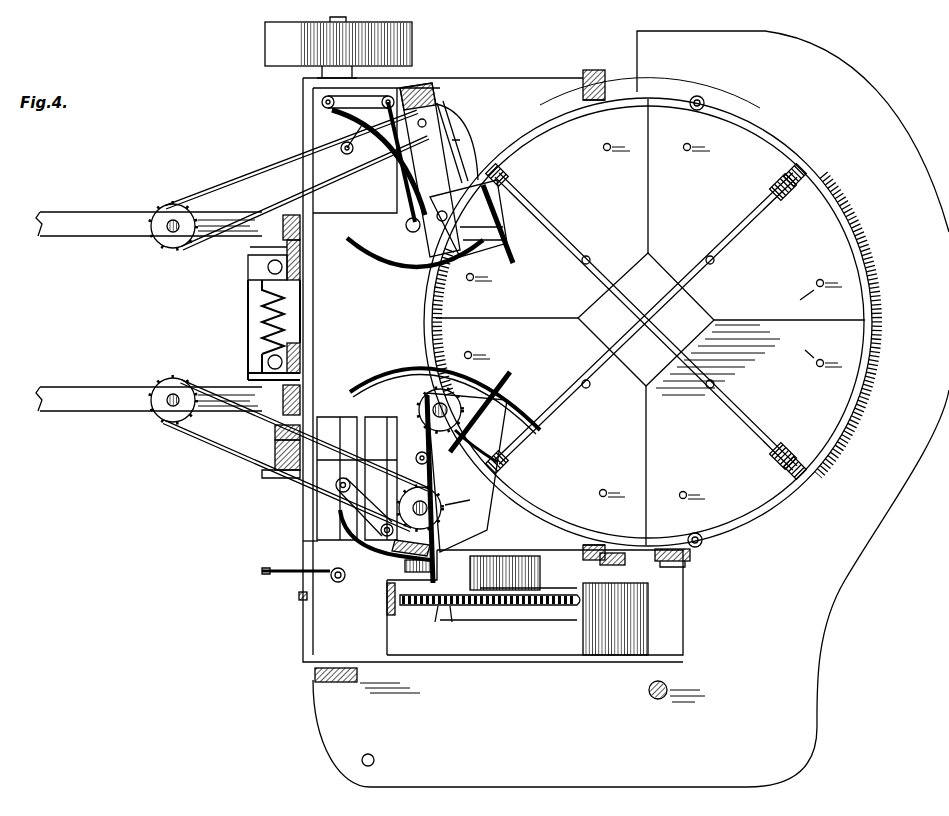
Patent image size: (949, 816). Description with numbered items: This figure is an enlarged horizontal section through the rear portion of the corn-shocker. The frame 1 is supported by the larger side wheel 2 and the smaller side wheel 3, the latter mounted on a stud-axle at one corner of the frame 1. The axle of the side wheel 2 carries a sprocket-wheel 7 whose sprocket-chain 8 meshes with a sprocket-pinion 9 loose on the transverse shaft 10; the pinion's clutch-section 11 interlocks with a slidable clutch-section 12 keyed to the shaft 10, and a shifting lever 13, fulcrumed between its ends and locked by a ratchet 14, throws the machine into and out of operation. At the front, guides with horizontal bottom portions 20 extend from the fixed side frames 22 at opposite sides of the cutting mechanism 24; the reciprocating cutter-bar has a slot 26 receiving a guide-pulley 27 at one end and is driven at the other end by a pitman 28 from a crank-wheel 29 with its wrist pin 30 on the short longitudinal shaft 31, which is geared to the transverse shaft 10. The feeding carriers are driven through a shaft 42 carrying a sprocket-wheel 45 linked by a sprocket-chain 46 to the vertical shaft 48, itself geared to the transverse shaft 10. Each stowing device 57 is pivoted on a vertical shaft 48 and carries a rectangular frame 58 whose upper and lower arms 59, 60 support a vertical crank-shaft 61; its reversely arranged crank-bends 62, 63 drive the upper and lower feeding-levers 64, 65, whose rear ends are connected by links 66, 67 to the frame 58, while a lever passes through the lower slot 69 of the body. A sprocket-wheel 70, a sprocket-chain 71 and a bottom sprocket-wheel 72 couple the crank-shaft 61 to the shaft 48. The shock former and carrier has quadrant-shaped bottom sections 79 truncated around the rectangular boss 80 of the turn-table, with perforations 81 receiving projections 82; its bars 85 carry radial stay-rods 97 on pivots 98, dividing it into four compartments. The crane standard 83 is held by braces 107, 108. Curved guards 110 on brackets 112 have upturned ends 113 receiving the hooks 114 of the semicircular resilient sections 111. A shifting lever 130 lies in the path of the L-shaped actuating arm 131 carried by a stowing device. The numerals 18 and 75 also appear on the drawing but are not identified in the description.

The frame 1 is at (480, 370).
The side wheel 2 is at (613, 656).
The side wheel 3 is at (412, 48).
The sprocket-wheel 7 is at (553, 576).
The sprocket-chain 8 is at (455, 621).
The sprocket-pinion 9 is at (431, 623).
The transverse shaft 10 is at (435, 568).
The clutch-section 11 is at (388, 595).
The slidable clutch-section 12 is at (450, 587).
The shifting lever 13 is at (278, 575).
The ratchet 14 is at (298, 596).
The housing 18 is at (631, 409).
The bottom bars or portions 20 is at (70, 385).
The side frames 22 is at (606, 560).
The cutting mechanism 24 is at (260, 318).
The slot 26 is at (270, 252).
The guide-pulley 27 is at (268, 268).
The pitman 28 is at (275, 432).
The crank-wheel 29 is at (282, 478).
The crank or wrist pin 30 is at (275, 450).
The short longitudinal shaft 31 is at (381, 478).
The shaft 42 is at (168, 408).
The sprocket-wheel 45 is at (165, 385).
The sprocket-chain 46 is at (192, 440).
The vertical shaft 48 is at (468, 546).
The packing or stowing devices 57 is at (375, 375).
The rectangular frame or piece 58 is at (400, 557).
The upper arm 59 is at (456, 150).
The lower arm 60 is at (445, 483).
The vertical crank-shaft 61 is at (443, 222).
The upper crank-bend 62 is at (406, 226).
The lower crank-bend 63 is at (430, 433).
The upper feeding-lever 64 is at (350, 115).
The lower feeding-lever 65 is at (512, 380).
The link 66 is at (358, 100).
The link 67 is at (372, 522).
The lower slot 69 is at (418, 368).
The sprocket-wheel 70 is at (430, 402).
The sprocket-chain 71 is at (463, 317).
The bottom sprocket-wheel 72 is at (445, 520).
The pivot 75 is at (416, 455).
The sections 79 is at (650, 322).
The rectangular boss or enlargement 80 is at (716, 313).
The perforations 81 is at (801, 325).
The projections 82 is at (605, 490).
The vertical standard 83 is at (656, 700).
The bars 85 is at (800, 480).
The stay-rods 97 is at (765, 428).
The pivots 98 is at (795, 452).
The brace 107 is at (336, 684).
The brace 108 is at (688, 567).
The guards 110 is at (660, 540).
The guards 111 is at (775, 118).
The brackets 112 is at (587, 530).
The upturned rear ends 113 is at (702, 547).
The open eyes or hooks 114 is at (698, 533).
The shifting lever 130 is at (340, 582).
The L-shaped actuating arm or device 131 is at (294, 543).